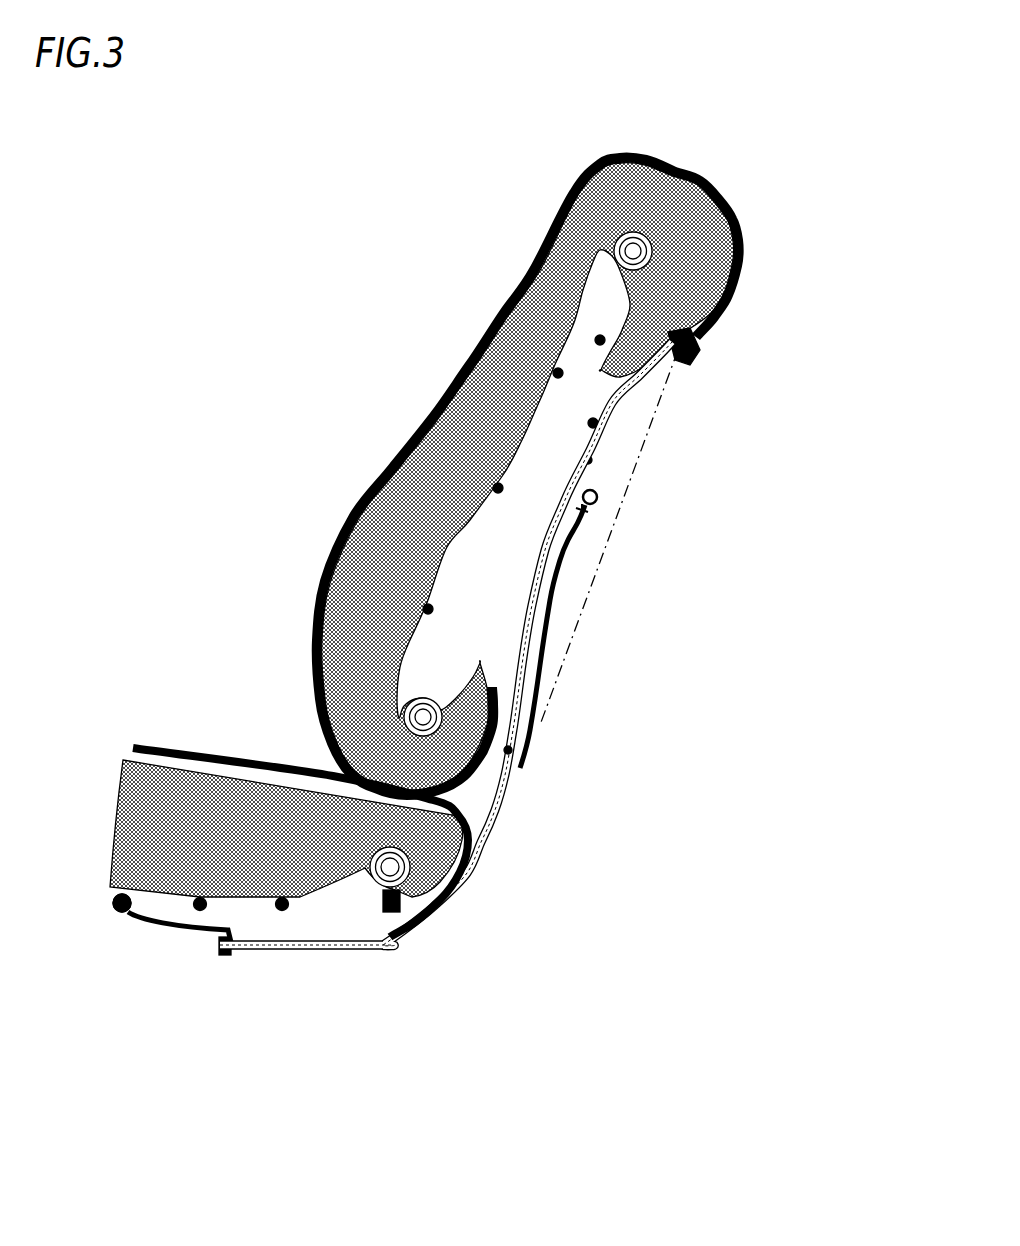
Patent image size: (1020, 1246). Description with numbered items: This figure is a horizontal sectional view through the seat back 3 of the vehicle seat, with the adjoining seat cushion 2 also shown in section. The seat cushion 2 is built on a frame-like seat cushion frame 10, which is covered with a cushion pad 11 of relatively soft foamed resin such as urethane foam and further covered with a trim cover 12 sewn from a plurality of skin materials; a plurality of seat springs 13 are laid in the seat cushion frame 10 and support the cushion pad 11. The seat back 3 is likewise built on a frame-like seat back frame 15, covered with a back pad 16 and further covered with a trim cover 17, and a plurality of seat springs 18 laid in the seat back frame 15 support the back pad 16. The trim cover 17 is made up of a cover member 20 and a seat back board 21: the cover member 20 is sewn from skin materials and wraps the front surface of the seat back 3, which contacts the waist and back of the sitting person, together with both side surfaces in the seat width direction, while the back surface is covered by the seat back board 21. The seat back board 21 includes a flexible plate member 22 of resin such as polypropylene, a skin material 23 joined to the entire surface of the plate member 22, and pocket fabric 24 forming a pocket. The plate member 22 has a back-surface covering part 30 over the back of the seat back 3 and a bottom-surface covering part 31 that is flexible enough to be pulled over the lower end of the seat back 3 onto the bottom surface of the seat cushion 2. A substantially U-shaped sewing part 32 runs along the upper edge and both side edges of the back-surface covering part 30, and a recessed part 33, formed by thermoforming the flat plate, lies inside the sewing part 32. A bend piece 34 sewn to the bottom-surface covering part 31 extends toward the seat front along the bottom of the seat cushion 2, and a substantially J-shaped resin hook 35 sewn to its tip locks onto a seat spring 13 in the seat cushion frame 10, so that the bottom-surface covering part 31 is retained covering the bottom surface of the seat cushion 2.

The seat cushion 2 is at (148, 740).
The seat back 3 is at (565, 175).
The seat cushion frame 10 is at (372, 882).
The cushion pad 11 is at (142, 794).
The trim cover 12 is at (241, 748).
The seat spring 13 is at (112, 906).
The seat back frame 15 is at (693, 180).
The back pad 16 is at (432, 452).
The trim cover 17 is at (884, 308).
The seat spring 18 is at (556, 371).
The cover member 20 is at (722, 308).
The seat back board 21 is at (814, 717).
The plate member 22 is at (593, 462).
The skin material 23 is at (527, 622).
The pocket fabric 24 is at (536, 670).
The back-surface covering part 30 is at (751, 362).
The bottom-surface covering part 31 is at (320, 953).
The sewing part 32 is at (690, 357).
The recessed part 33 is at (600, 425).
The bend piece 34 is at (142, 917).
The hook 35 is at (120, 912).